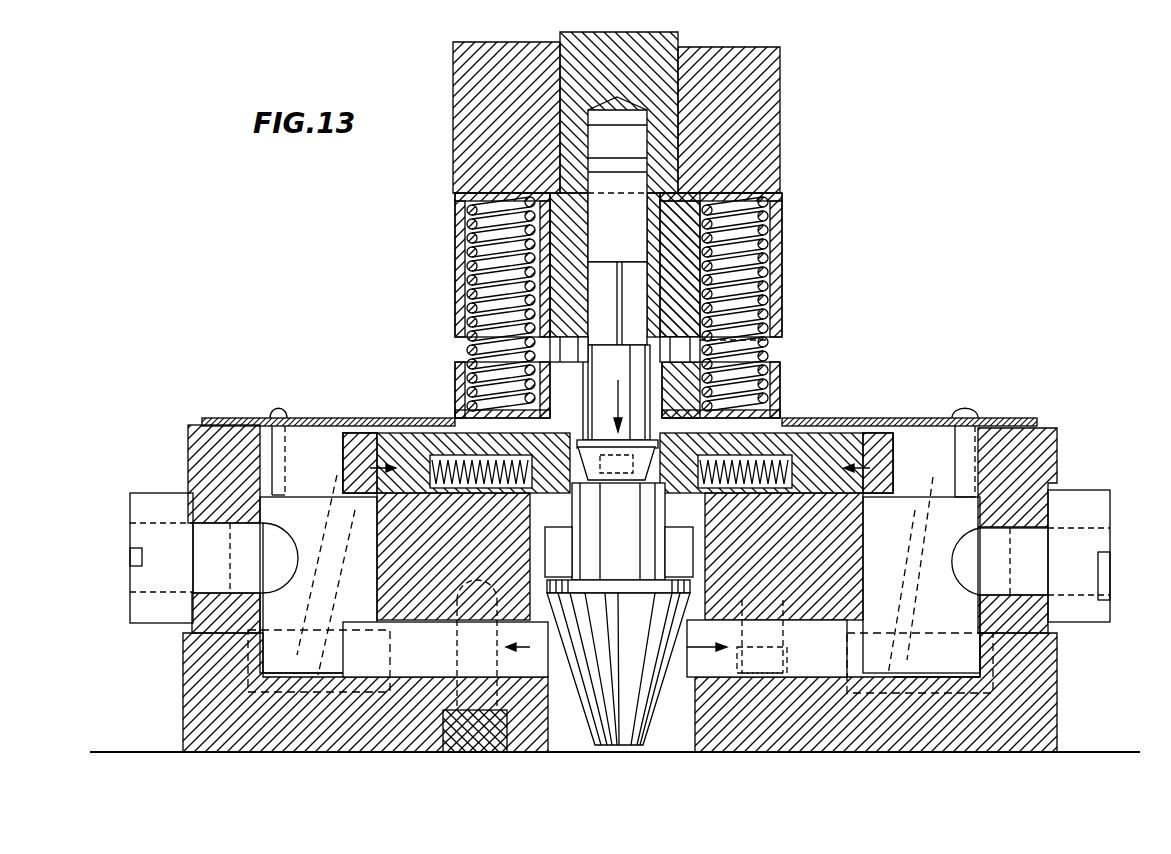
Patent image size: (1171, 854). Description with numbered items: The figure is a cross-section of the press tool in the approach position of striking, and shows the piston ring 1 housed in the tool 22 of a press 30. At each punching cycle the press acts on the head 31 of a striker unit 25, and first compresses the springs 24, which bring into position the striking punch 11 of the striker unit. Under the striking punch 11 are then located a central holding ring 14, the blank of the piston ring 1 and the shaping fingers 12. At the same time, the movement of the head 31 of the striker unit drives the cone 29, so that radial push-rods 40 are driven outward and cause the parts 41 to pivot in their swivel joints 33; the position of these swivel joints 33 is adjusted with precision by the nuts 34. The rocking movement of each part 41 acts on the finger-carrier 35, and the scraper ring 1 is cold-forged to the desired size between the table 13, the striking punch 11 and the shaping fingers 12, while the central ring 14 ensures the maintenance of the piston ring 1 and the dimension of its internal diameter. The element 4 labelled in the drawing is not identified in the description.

The piston ring 1 is at (758, 438).
The sliding jaw block 4 is at (905, 495).
The striking punch 11 is at (745, 360).
The shaping fingers 12 is at (825, 440).
The table 13 is at (442, 455).
The central holding ring 14 is at (517, 440).
The tool 22 is at (1058, 400).
The springs 24 is at (742, 280).
The striker unit 25 is at (790, 243).
The cone 29 is at (603, 713).
The press 30 is at (742, 75).
The head 31 is at (665, 147).
The swivel joints 33 is at (997, 565).
The nuts 34 is at (1072, 570).
The finger-carrier 35 is at (830, 505).
The radial push-rods 40 is at (803, 663).
The parts 41 is at (932, 607).